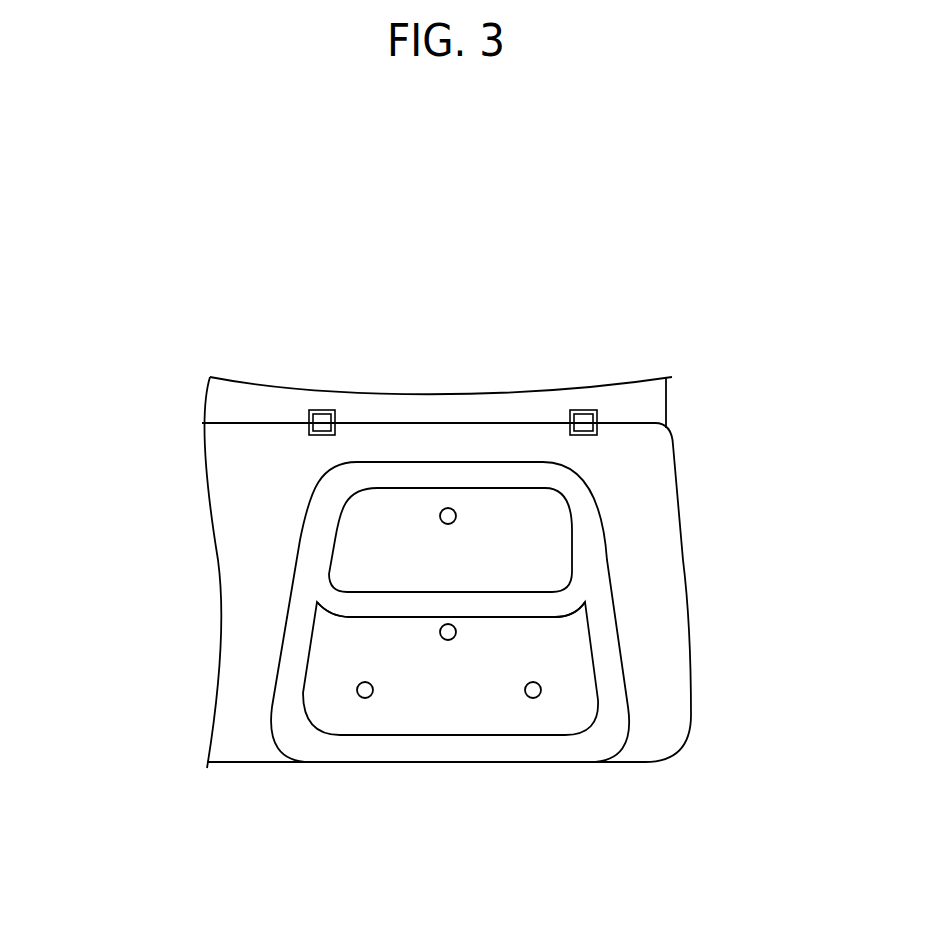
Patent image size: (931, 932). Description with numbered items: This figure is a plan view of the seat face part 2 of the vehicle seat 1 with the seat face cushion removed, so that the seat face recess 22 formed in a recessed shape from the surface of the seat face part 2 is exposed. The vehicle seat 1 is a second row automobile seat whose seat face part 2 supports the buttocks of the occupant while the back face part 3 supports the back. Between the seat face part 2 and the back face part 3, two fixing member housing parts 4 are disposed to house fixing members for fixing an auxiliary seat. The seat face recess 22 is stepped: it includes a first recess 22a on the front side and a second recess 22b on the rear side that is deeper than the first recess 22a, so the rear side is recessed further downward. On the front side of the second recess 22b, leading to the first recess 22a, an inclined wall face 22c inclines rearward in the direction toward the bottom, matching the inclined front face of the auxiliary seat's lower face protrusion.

The vehicle seat 1 is at (446, 292).
The seat face part 2 is at (690, 640).
The back face part 3 is at (667, 393).
The fixing member housing part 4 is at (292, 416).
The seat face recess 22 is at (110, 543).
The first recess 22a is at (335, 648).
The second recess 22b is at (348, 553).
The inclined wall face 22c is at (350, 600).